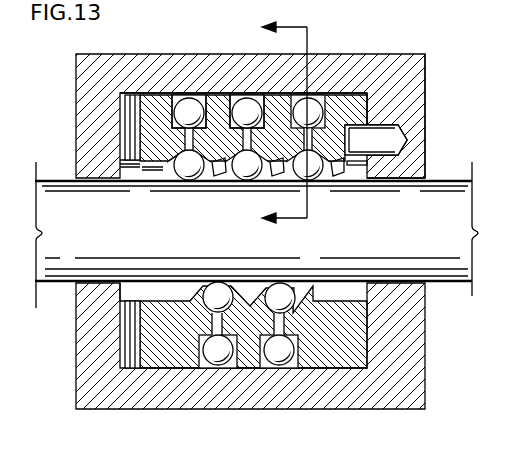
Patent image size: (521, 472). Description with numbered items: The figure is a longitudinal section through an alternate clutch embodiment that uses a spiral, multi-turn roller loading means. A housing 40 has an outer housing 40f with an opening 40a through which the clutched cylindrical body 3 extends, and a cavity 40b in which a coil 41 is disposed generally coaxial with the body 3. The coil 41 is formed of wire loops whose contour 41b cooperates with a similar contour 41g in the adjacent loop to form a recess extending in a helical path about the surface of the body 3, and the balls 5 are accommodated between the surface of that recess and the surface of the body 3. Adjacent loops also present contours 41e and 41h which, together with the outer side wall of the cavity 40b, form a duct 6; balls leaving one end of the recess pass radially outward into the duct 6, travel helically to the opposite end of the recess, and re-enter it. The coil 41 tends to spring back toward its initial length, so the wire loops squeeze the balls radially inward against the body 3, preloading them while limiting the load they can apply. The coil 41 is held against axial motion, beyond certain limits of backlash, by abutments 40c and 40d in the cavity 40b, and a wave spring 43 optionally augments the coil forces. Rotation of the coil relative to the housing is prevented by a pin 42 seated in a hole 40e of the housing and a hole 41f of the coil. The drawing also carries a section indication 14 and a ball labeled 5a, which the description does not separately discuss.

The body 3 is at (420, 233).
The balls 5 is at (284, 296).
The ball 5a is at (211, 352).
The duct 6 is at (289, 366).
The section line 14 is at (272, 124).
The housing 40 is at (432, 88).
The opening 40a is at (423, 163).
The cavity 40b is at (350, 93).
The abutment 40c is at (118, 145).
The abutment 40d is at (397, 90).
The hole 40e is at (390, 123).
The outer housing 40f is at (426, 78).
The coil 41 is at (335, 100).
The contour 41b is at (205, 162).
The contour 41e is at (175, 93).
The hole 41f is at (356, 160).
The contour 41g is at (173, 158).
The contour 41h is at (202, 93).
The pin 42 is at (385, 137).
The wave spring 43 is at (120, 110).